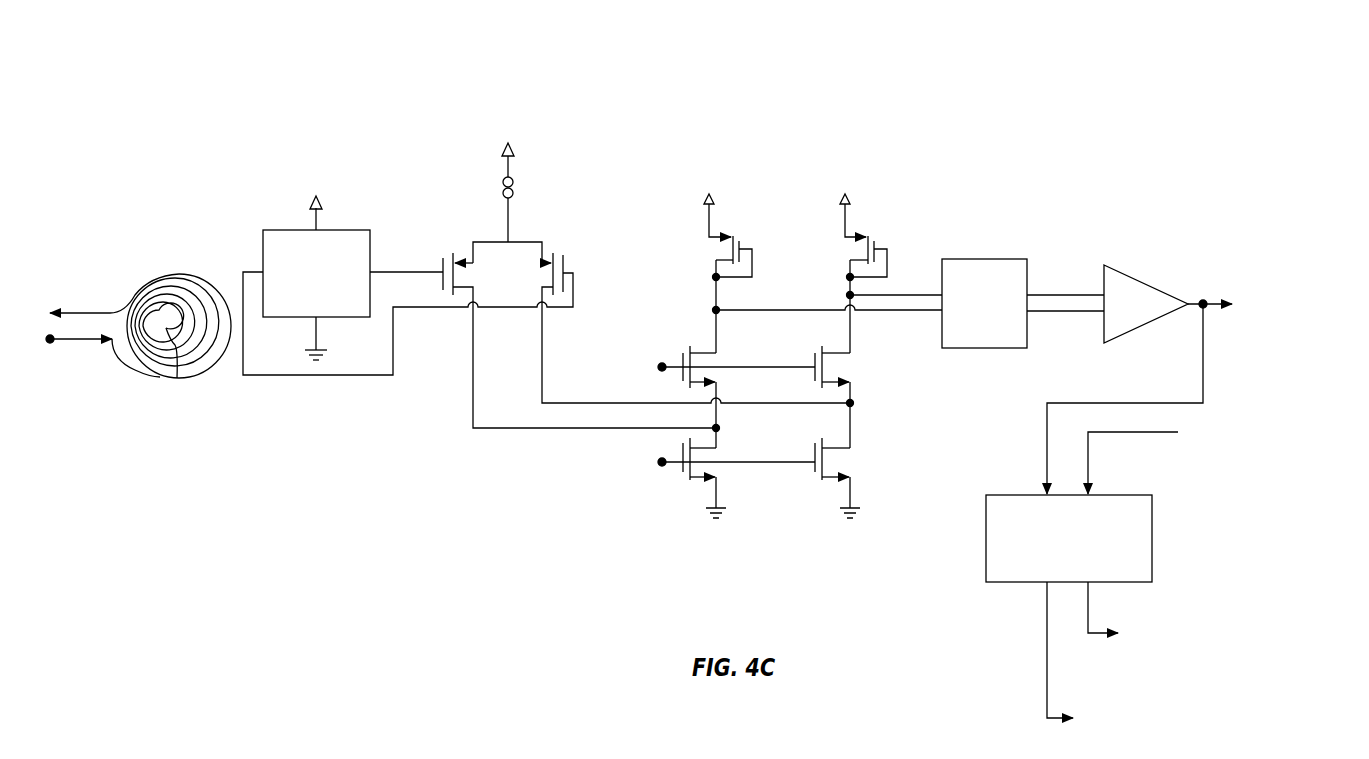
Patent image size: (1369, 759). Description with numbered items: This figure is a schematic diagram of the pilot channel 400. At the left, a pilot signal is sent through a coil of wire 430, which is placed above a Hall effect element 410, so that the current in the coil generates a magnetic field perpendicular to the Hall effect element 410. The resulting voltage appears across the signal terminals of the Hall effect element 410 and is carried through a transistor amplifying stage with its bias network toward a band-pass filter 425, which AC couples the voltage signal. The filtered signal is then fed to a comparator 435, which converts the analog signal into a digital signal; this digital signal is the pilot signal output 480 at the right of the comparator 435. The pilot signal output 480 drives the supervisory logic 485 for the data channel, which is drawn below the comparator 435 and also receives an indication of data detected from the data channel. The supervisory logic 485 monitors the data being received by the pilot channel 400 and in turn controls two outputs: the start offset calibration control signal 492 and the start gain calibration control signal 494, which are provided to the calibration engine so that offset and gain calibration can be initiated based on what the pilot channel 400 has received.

The pilot channel 400 is at (1109, 121).
The Hall effect element 410 is at (370, 243).
The band-pass filter 425 is at (987, 258).
The coil of wire 430 is at (177, 378).
The comparator 435 is at (1127, 272).
The pilot signal output 480 is at (1276, 327).
The supervisory logic 485 is at (1153, 535).
The start offset calibration control signal 492 is at (1195, 607).
The start gain calibration control signal 494 is at (1200, 712).